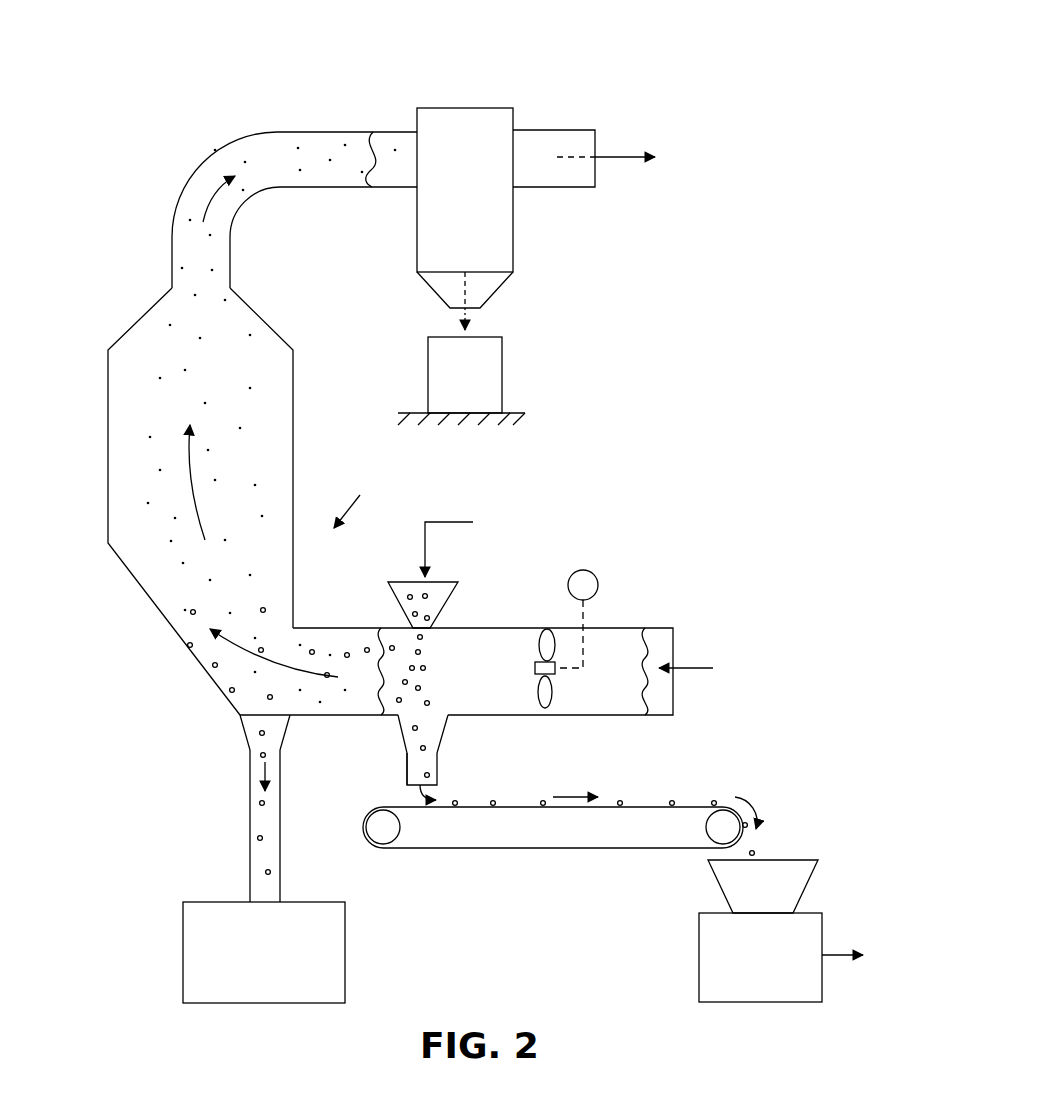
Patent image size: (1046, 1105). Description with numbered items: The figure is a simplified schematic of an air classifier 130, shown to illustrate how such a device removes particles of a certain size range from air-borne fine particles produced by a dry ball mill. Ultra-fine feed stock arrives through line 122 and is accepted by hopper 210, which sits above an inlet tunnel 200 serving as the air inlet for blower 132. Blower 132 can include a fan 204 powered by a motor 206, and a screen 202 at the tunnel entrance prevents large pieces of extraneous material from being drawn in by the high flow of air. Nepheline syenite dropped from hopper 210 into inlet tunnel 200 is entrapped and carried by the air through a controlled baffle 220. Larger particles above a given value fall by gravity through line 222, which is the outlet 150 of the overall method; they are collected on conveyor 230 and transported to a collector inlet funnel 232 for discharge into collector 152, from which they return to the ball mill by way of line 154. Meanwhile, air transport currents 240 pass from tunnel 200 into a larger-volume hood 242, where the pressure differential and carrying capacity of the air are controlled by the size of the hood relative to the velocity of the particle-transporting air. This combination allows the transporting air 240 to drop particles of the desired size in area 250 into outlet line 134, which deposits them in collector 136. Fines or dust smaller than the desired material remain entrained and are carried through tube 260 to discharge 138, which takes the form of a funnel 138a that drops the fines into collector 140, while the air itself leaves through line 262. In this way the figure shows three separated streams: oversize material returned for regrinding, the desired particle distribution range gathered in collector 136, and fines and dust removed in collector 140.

The line 122 is at (455, 522).
The air classifier 130 is at (368, 499).
The blower 132 is at (498, 628).
The outlet line 134 is at (250, 844).
The collector 136 is at (345, 948).
The discharge 138 is at (478, 108).
The funnel 138a is at (513, 252).
The collector 140 is at (502, 368).
The outlet 150 is at (440, 770).
The collector 152 is at (699, 953).
The line 154 is at (836, 955).
The inlet tunnel 200 is at (617, 628).
The screen 202 is at (650, 645).
The fan 204 is at (548, 708).
The motor 206 is at (588, 568).
The hopper 210 is at (390, 598).
The controlled baffle 220 is at (375, 683).
The line 222 is at (408, 770).
The conveyor 230 is at (480, 848).
The collector inlet funnel 232 is at (790, 860).
The air transport currents 240 is at (200, 183).
The hood 242 is at (108, 412).
The area 250 is at (262, 718).
The tube 260 is at (335, 132).
The line 262 is at (572, 130).